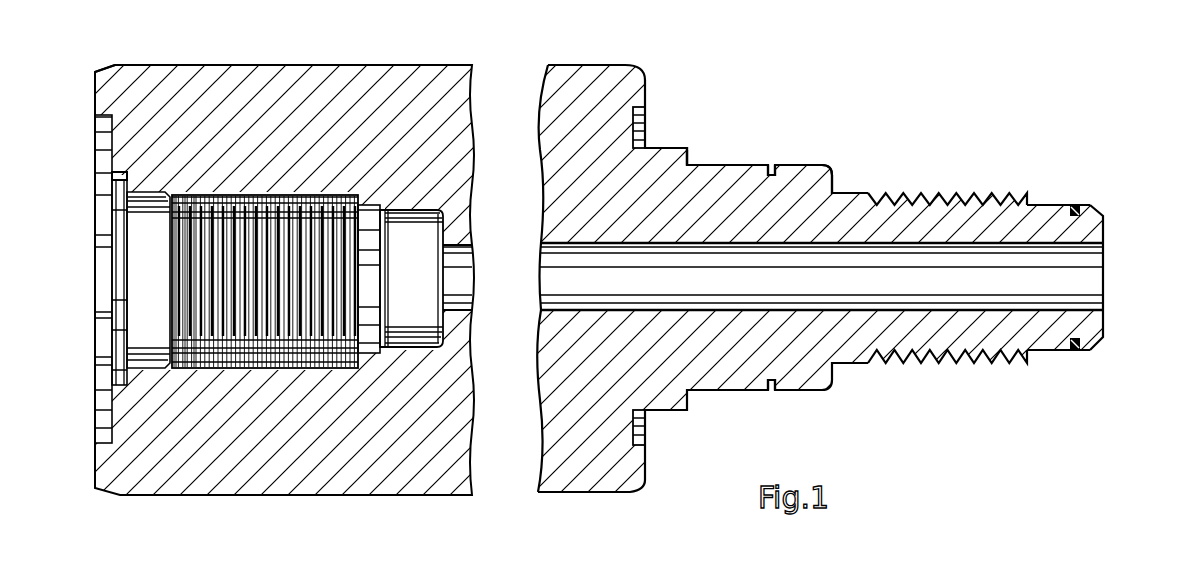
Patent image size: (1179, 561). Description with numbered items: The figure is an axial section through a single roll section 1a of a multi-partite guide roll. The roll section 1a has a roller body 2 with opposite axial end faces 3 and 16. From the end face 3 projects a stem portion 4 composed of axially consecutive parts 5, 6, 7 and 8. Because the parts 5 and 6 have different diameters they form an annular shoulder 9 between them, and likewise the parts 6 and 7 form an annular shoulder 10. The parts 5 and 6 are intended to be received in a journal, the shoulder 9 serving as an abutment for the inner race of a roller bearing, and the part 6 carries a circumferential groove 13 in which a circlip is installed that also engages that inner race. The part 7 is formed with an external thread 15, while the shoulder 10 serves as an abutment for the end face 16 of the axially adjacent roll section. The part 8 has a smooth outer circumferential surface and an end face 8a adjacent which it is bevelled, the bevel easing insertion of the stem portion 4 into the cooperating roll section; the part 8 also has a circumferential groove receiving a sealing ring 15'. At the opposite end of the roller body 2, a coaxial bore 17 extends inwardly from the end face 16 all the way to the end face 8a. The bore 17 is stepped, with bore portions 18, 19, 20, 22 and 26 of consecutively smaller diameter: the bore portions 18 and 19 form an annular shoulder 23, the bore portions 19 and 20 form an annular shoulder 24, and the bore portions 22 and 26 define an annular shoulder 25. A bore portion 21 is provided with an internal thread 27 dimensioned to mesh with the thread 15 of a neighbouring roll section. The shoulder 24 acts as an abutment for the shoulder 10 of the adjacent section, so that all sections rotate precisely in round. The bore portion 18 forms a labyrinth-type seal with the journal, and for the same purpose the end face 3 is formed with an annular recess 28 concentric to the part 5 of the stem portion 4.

The roll section 1a is at (324, 54).
The roller body 2 is at (375, 75).
The end face 3 is at (645, 72).
The stem portion 4 is at (790, 186).
The part of stem portion 5 is at (670, 148).
The part of stem portion 6 is at (818, 173).
The part of stem portion 7 is at (978, 215).
The part of stem portion 8 is at (1042, 352).
The end face 8a is at (1105, 233).
The annular shoulder 9 is at (688, 158).
The annular shoulder 10 is at (833, 184).
The circumferential groove 13 is at (770, 165).
The external thread 15 is at (997, 170).
The sealing ring 15' is at (1083, 379).
The end face 16 is at (95, 86).
The coaxial bore 17 is at (253, 330).
The bore portion 18 is at (110, 125).
The bore portion 19 is at (120, 195).
The bore portion 20 is at (160, 278).
The bore portion 21 is at (195, 196).
The bore portion 22 is at (420, 332).
The annular shoulder 23 is at (112, 153).
The annular shoulder 24 is at (125, 242).
The annular shoulder 25 is at (436, 237).
The bore portion 26 is at (776, 297).
The internal thread 27 is at (193, 308).
The annular recess 28 is at (633, 113).